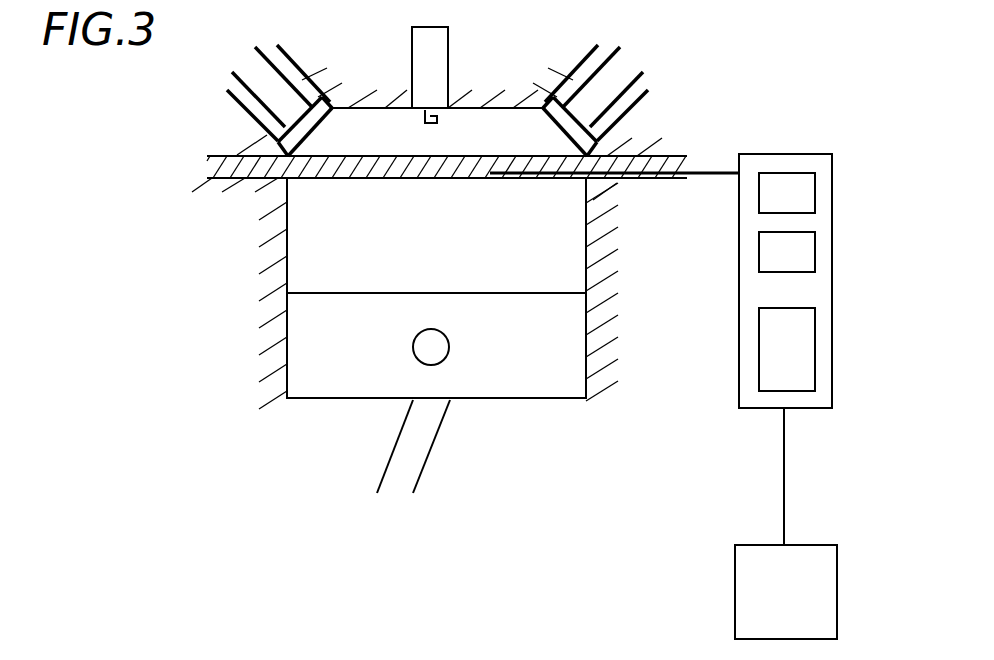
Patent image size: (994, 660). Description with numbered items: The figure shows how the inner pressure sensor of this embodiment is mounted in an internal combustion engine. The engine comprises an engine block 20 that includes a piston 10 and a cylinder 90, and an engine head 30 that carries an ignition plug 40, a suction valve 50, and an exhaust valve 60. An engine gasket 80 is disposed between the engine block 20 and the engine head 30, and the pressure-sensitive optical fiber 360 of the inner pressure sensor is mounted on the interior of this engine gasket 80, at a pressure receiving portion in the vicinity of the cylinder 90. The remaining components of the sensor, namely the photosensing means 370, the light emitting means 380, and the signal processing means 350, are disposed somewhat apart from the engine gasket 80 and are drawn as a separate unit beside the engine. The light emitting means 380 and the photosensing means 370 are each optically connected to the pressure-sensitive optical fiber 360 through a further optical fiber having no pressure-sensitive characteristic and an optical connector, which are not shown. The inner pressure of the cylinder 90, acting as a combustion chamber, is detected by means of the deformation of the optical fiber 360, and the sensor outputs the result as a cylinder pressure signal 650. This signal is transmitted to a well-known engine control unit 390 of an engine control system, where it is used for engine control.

The piston 10 is at (570, 353).
The engine block 20 is at (265, 248).
The engine head 30 is at (253, 140).
The ignition plug 40 is at (435, 73).
The suction valve 50 is at (307, 112).
The exhaust valve 60 is at (562, 120).
The engine gasket 80 is at (663, 155).
The cylinder 90 is at (338, 272).
The signal processing means 350 is at (815, 328).
The optical fiber 360 is at (712, 174).
The photosensing means 370 is at (815, 195).
The light emitting means 380 is at (815, 253).
The engine control unit 390 is at (735, 602).
The cylinder pressure signal 650 is at (783, 500).